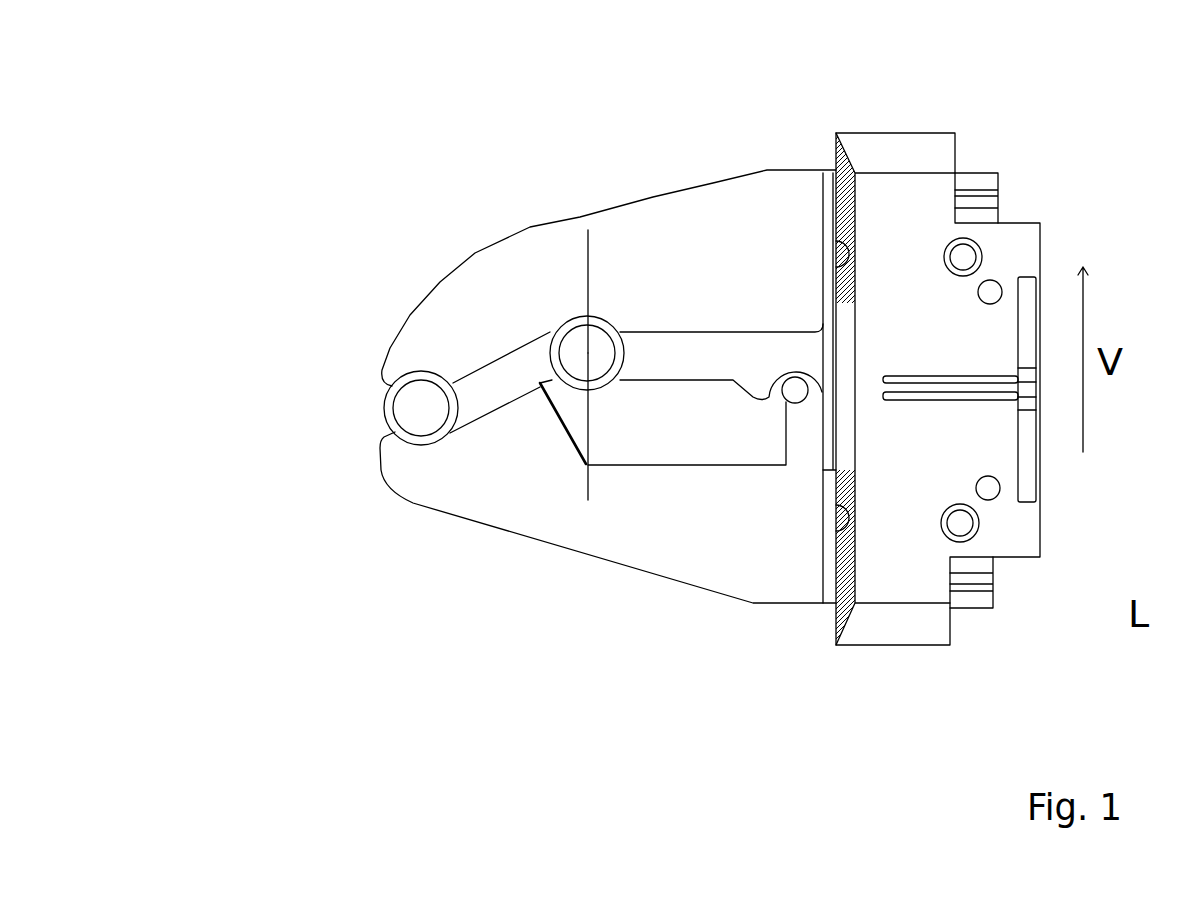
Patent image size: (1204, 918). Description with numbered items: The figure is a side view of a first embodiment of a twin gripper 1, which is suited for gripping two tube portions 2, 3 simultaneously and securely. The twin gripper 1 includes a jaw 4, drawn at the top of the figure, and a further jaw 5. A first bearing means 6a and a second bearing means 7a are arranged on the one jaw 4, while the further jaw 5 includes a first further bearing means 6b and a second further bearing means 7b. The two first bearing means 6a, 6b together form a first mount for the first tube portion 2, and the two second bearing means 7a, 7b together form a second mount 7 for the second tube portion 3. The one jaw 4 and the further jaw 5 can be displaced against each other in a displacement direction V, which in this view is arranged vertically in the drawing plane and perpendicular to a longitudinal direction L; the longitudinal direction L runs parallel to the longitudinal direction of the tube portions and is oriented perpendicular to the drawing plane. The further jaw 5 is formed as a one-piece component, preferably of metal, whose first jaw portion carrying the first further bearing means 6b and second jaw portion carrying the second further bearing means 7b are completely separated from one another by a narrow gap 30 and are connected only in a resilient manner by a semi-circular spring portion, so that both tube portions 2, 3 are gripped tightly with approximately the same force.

The twin gripper 1 is at (1009, 120).
The first tube portion 2 is at (384, 377).
The second tube portion 3 is at (576, 316).
The jaw 4 is at (800, 225).
The further jaw 5 is at (770, 532).
The first bearing means 6a is at (393, 377).
The first further bearing means 6b is at (397, 433).
The second mount 7 is at (611, 301).
The second bearing means 7a is at (588, 230).
The second further bearing means 7b is at (588, 500).
The narrow gap 30 is at (667, 467).